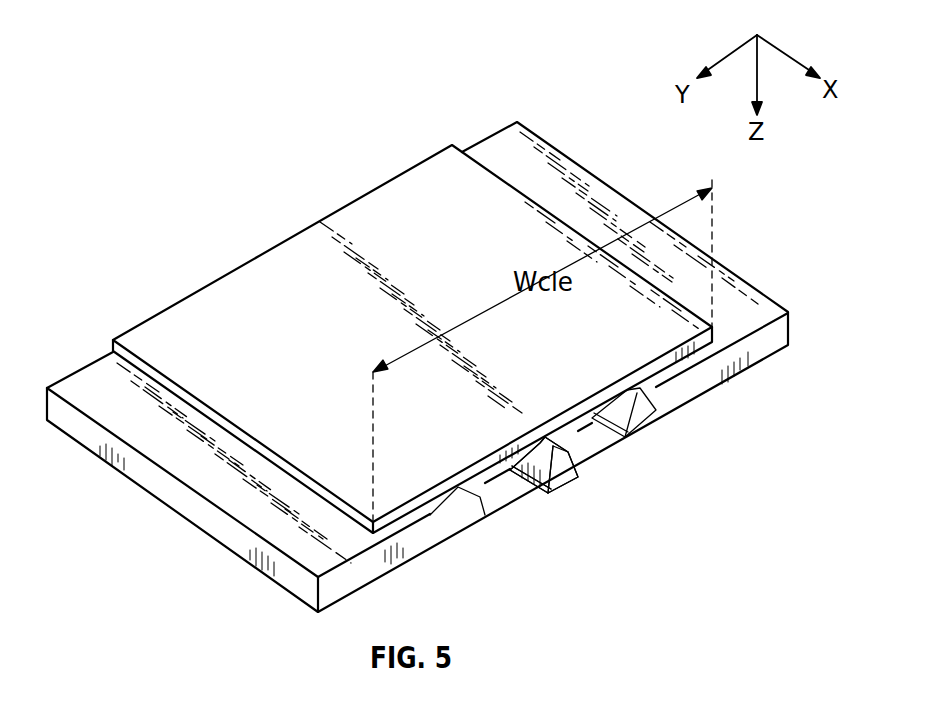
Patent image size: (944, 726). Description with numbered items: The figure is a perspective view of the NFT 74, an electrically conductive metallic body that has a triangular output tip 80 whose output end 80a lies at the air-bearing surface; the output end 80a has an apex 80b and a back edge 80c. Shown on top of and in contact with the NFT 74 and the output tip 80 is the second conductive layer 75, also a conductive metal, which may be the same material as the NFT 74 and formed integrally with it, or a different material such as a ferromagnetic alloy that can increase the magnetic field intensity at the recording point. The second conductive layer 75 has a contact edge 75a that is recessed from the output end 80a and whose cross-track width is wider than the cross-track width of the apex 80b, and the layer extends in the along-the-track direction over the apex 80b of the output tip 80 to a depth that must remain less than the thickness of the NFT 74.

The NFT 74 is at (737, 290).
The second conductive layer 75 is at (293, 247).
The contact edge 75a is at (632, 404).
The output tip 80 is at (545, 460).
The output end 80a is at (575, 473).
The apex 80b is at (558, 440).
The back edge 80c is at (565, 487).